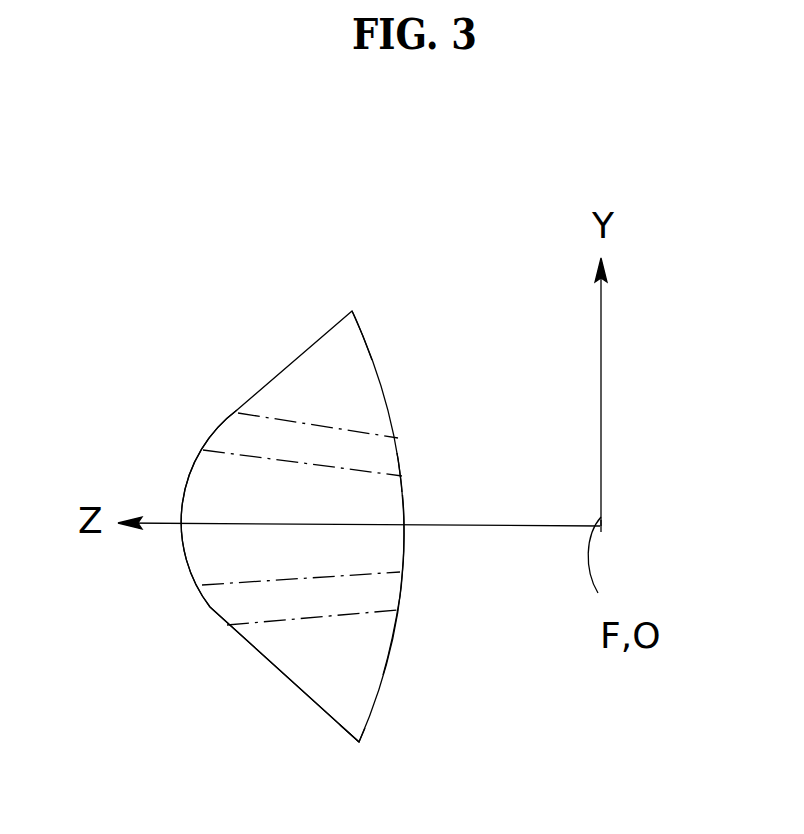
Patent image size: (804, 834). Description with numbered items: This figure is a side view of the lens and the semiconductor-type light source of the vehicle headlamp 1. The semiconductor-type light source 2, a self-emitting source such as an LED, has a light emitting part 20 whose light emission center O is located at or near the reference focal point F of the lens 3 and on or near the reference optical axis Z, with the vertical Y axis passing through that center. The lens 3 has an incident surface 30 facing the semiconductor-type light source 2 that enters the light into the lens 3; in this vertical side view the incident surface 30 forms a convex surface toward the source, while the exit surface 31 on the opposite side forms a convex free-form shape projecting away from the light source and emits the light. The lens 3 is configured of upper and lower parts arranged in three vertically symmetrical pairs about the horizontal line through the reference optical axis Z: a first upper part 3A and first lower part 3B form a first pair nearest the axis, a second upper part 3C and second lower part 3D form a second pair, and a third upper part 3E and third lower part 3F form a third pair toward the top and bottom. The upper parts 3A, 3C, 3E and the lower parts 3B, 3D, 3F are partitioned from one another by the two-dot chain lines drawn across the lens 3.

The vehicle headlamp 1 is at (250, 377).
The semiconductor-type light source 2 is at (603, 525).
The light emitting part 20 is at (597, 528).
The lens 3 is at (187, 562).
The incident surface 30 is at (371, 718).
The exit surface 31 is at (210, 607).
The first upper part 3A is at (407, 510).
The first lower part 3B is at (405, 544).
The second upper part 3C is at (405, 492).
The second lower part 3D is at (403, 551).
The third upper part 3E is at (366, 345).
The third lower part 3F is at (382, 675).